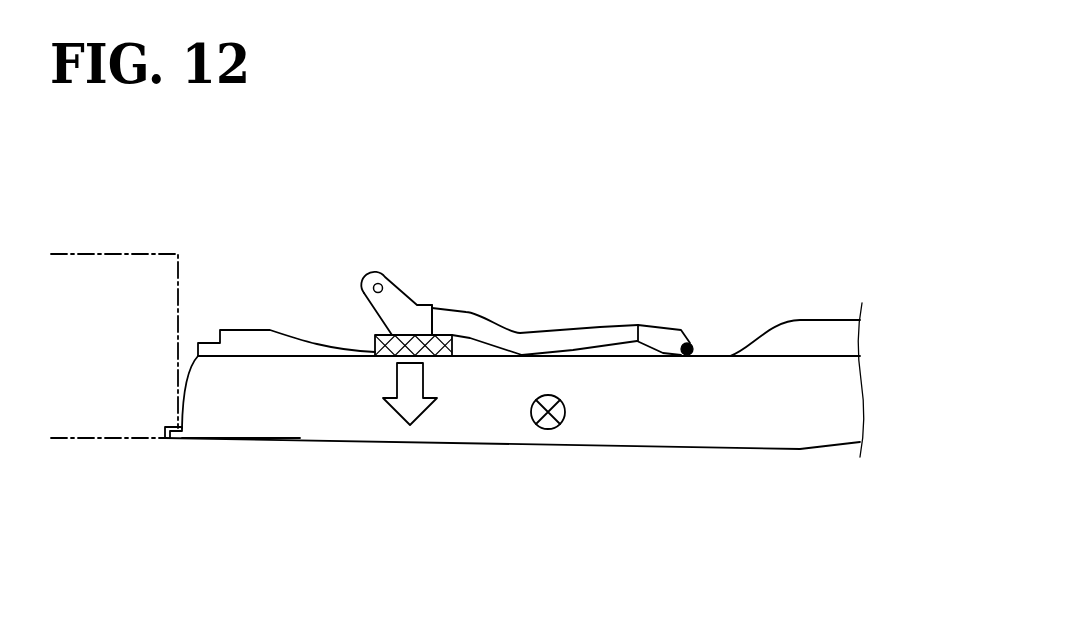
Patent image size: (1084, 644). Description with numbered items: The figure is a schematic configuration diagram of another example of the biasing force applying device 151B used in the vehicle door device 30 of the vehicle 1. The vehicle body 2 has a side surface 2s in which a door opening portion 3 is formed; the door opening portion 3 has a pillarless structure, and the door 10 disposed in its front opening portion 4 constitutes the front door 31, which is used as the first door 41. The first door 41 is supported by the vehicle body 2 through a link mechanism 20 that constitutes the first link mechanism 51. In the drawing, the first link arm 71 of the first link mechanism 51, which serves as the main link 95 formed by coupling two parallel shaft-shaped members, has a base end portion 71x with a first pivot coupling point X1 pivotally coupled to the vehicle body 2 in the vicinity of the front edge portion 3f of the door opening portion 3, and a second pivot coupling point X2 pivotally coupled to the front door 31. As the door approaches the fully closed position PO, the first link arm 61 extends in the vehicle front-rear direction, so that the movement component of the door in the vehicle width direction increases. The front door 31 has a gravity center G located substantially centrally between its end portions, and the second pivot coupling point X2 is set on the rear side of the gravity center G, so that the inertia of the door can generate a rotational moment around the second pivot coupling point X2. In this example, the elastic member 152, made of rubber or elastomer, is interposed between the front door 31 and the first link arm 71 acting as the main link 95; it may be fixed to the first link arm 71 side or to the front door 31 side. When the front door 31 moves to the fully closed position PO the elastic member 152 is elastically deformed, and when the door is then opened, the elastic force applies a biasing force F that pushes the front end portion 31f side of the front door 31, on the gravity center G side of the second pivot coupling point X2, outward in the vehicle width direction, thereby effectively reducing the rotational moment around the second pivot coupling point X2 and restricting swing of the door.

The vehicle 1 is at (81, 594).
The vehicle door device 30 is at (81, 562).
The vehicle body 2 is at (116, 476).
The side surface 2s is at (100, 440).
The door opening portion 3 is at (106, 341).
The front edge portion 3f is at (106, 341).
The front opening portion 4 is at (178, 319).
The front door 31 is at (514, 416).
The first door 41 is at (514, 416).
The door 10 is at (514, 416).
The fully closed position PO is at (618, 449).
The front end portion 31f is at (213, 438).
The biasing force applying device 151B is at (343, 306).
The elastic member 152 is at (373, 335).
The first link arm 71 is at (526, 304).
The first link arm 61 is at (526, 304).
The main link 95 is at (589, 326).
The base end portion 71x is at (432, 304).
The first pivot coupling point X1 is at (378, 283).
The second pivot coupling point X2 is at (690, 342).
The biasing force F is at (395, 424).
The gravity center G is at (548, 429).
The first link mechanism 51 is at (785, 193).
The link mechanism 20 is at (737, 217).